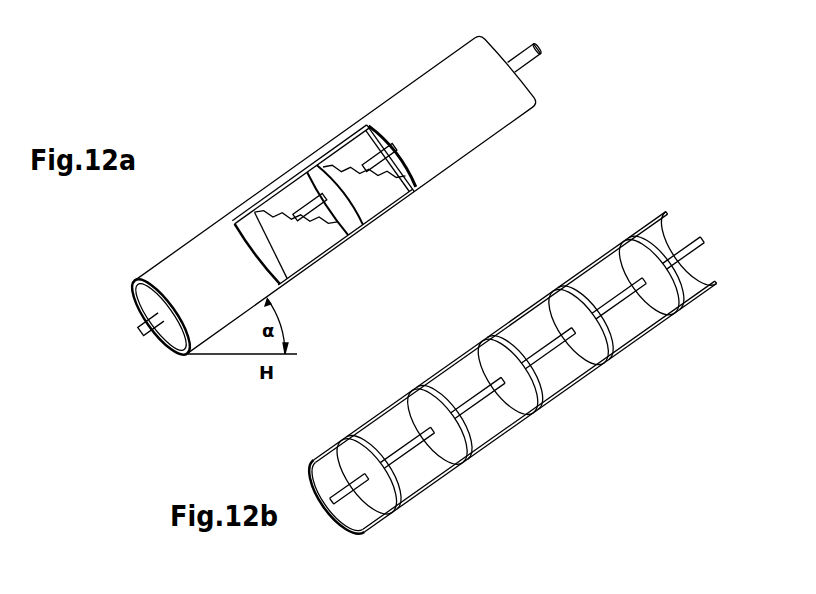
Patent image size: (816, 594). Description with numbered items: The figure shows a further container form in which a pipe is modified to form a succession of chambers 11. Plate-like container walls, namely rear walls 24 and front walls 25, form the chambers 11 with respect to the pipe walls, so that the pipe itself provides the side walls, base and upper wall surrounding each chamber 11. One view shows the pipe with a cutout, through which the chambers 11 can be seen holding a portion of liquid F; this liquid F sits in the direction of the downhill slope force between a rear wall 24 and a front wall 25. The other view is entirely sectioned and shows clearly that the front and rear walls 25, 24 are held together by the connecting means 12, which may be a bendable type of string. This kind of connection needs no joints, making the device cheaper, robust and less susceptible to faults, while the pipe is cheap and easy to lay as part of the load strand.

In FIG. 12A, the chamber 11 is at (358, 155).
In FIG. 12B, the chamber 11 is at (565, 375).
In FIG. 12A, the connecting means 12 is at (532, 55).
In FIG. 12B, the connecting means 12 is at (693, 247).
In FIG. 12A, the rear wall 24 is at (352, 212).
In FIG. 12B, the rear wall 24 is at (532, 397).
In FIG. 12A, the front wall 25 is at (283, 262).
In FIG. 12B, the front wall 25 is at (462, 443).
In FIG. 12A, the liquid F is at (372, 192).